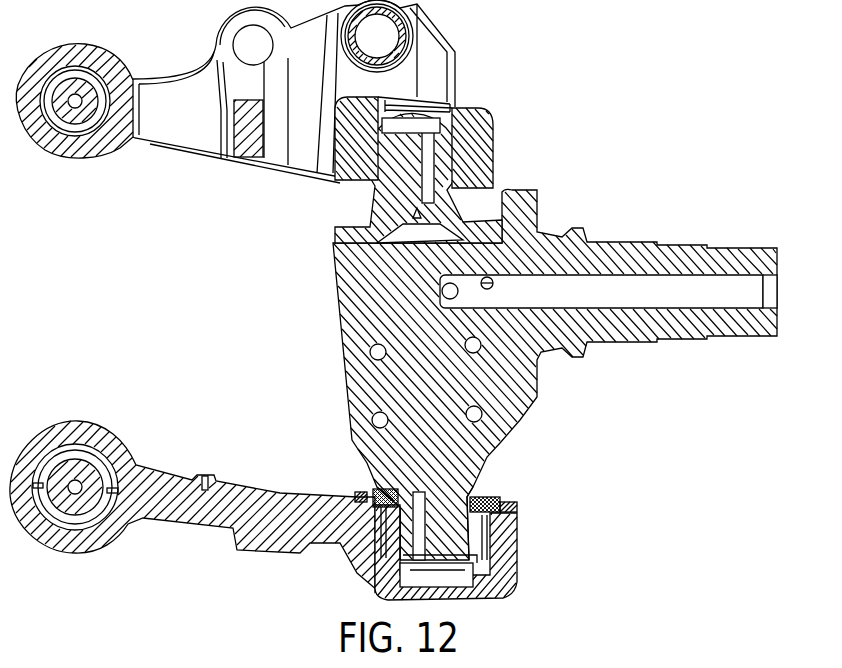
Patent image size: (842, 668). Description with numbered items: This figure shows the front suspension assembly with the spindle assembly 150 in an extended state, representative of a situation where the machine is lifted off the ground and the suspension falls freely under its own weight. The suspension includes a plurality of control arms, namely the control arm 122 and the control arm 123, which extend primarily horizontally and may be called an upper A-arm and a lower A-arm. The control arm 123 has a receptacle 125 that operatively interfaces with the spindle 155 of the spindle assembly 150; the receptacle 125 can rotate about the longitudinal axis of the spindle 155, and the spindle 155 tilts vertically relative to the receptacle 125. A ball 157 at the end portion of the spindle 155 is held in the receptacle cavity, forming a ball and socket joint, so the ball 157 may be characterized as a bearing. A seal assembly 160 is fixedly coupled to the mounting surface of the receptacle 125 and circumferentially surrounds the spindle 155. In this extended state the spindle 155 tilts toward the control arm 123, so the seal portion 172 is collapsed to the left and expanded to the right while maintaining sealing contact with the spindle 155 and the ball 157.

The control arm 122 is at (205, 145).
The control arm 123 is at (248, 528).
The receptacle 125 is at (510, 562).
The spindle assembly 150 is at (607, 184).
The spindle 155 is at (472, 472).
The ball 157 is at (393, 552).
The seal assembly 160 is at (527, 506).
The seal portion 172 is at (375, 490).